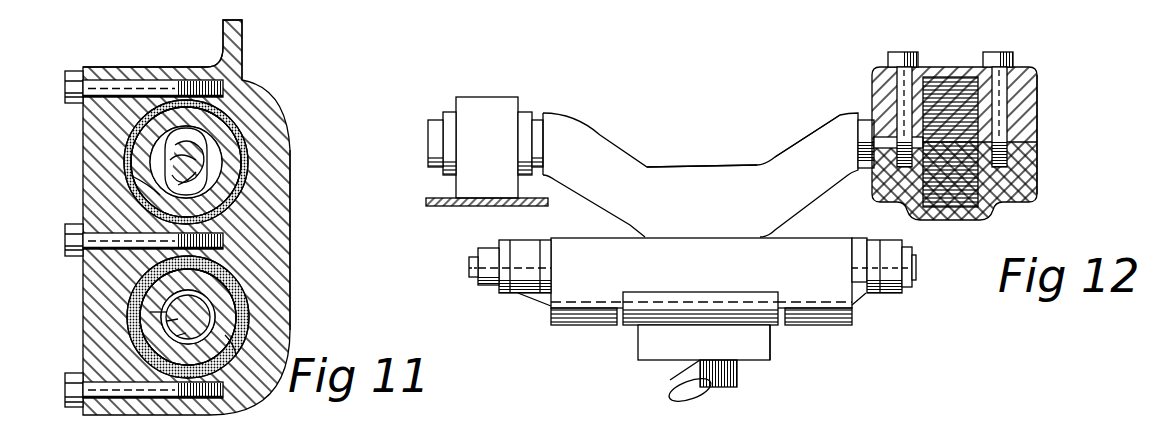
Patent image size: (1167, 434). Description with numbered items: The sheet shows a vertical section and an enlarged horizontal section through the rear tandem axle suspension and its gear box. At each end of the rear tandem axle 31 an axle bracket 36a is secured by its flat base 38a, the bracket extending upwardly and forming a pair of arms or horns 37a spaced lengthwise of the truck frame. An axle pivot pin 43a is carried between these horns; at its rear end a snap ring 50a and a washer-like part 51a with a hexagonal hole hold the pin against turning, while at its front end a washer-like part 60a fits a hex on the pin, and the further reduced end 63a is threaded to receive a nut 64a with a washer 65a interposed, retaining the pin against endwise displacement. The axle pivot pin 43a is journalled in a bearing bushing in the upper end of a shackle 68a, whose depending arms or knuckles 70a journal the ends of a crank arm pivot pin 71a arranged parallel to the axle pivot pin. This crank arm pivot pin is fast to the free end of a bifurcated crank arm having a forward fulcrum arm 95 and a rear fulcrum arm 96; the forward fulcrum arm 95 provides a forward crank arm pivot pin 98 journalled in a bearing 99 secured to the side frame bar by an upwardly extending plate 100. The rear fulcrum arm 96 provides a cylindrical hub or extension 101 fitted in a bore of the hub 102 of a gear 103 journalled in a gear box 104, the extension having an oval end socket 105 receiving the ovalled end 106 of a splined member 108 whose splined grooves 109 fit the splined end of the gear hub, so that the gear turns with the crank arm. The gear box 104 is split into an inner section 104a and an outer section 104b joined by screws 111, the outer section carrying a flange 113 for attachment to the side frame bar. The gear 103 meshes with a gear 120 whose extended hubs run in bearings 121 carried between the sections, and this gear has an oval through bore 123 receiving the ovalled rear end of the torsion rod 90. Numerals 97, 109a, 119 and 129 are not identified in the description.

In FIG. 12, the rear tandem axle 31 is at (731, 388).
In FIG. 12, the axle bracket 36a is at (648, 352).
In FIG. 12, the arms or horns 37a is at (518, 296).
In FIG. 12, the flat base 38a is at (760, 356).
In FIG. 12, the axle pivot pin 43a is at (858, 266).
In FIG. 12, the snap ring 50a is at (906, 250).
In FIG. 12, the washer-like part 51a is at (885, 234).
In FIG. 12, the washer-like part 60a is at (505, 240).
In FIG. 12, the further reduced end 63a is at (469, 269).
In FIG. 12, the nut 64a is at (478, 252).
In FIG. 12, the washer 65a is at (495, 246).
In FIG. 12, the shackle 68a is at (700, 246).
In FIG. 12, the arms or knuckles 70a is at (588, 326).
In FIG. 12, the crank arm pivot pin 71a is at (620, 292).
In FIG. 11, the torsion rod 90 is at (178, 160).
In FIG. 12, the forward fulcrum arm 95 is at (591, 132).
In FIG. 12, the rear fulcrum arm 96 is at (815, 131).
In FIG. 12, the yoke web 97 is at (698, 172).
In FIG. 12, the forward crank arm pivot pin 98 is at (430, 135).
In FIG. 11, the bearing 99 is at (214, 346).
In FIG. 12, the bearing 99 is at (494, 97).
In FIG. 12, the upwardly extending plate 100 is at (428, 202).
In FIG. 11, the cylindrical hub or extension 101 is at (150, 311).
In FIG. 12, the cylindrical hub or extension 101 is at (858, 150).
In FIG. 11, the hub 102 is at (237, 325).
In FIG. 11, the gear 103 is at (249, 305).
In FIG. 12, the gear 103 is at (968, 197).
In FIG. 11, the gear box 104 is at (272, 111).
In FIG. 11, the inner section 104a is at (138, 70).
In FIG. 11, the outer section 104b is at (275, 140).
In FIG. 12, the outer section 104b is at (1036, 198).
In FIG. 11, the oval end socket 105 is at (172, 320).
In FIG. 11, the ovalled end 106 is at (178, 305).
In FIG. 11, the splined member 108 is at (186, 335).
In FIG. 12, the splined grooves 109 is at (1032, 68).
In FIG. 12, the housing wall 109a is at (1028, 85).
In FIG. 11, the screws 111 is at (73, 72).
In FIG. 12, the screws 111 is at (897, 52).
In FIG. 11, the flange 113 is at (242, 36).
In FIG. 11, the ring 119 is at (246, 290).
In FIG. 11, the gear 120 is at (150, 143).
In FIG. 11, the bearings 121 is at (101, 180).
In FIG. 11, the through bore 123 is at (255, 185).
In FIG. 11, the bore 129 is at (196, 166).